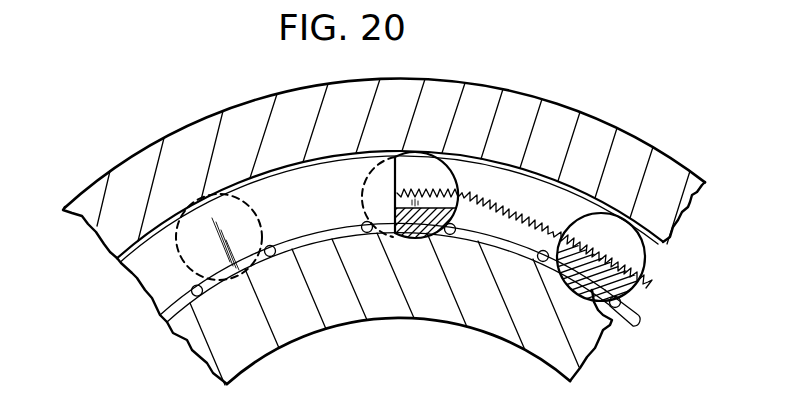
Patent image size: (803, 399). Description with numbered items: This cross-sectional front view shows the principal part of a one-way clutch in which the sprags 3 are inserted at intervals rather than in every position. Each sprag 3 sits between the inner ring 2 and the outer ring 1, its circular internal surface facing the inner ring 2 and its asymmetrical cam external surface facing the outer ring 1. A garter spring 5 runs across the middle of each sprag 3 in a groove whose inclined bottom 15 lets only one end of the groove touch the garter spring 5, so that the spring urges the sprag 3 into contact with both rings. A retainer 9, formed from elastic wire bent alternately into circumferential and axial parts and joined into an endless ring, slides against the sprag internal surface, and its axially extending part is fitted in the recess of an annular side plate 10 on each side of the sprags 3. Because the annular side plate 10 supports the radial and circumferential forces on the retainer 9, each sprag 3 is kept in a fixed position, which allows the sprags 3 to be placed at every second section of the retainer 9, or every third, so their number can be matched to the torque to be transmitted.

The outer ring 1 is at (557, 113).
The inner ring 2 is at (305, 321).
The sprag 3 is at (432, 181).
The garter spring 5 is at (643, 260).
The retainer 9 is at (640, 305).
The annular side plate 10 is at (133, 285).
The bottom 15 is at (458, 181).